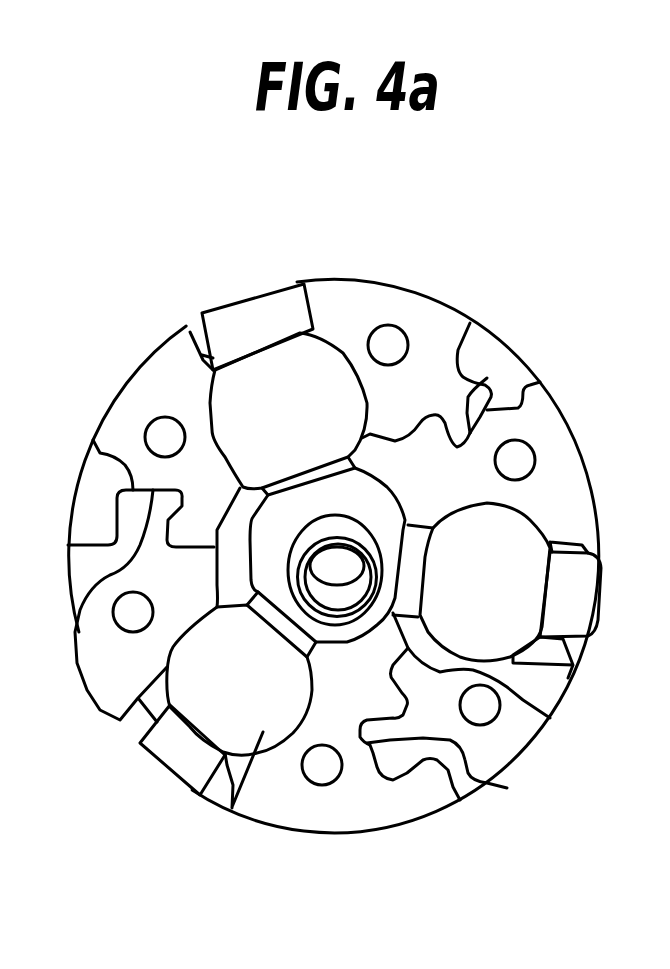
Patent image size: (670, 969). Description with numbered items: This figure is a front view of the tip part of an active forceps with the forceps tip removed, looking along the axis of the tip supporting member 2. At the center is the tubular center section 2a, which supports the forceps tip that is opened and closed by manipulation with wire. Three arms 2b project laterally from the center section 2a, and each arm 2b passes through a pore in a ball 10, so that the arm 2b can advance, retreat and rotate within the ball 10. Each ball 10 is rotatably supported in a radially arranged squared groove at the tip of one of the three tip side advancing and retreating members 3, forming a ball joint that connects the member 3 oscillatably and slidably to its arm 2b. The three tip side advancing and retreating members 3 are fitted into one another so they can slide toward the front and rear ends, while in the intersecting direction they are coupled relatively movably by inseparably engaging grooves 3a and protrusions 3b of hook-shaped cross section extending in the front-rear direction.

The tip supporting member 2 is at (377, 459).
The tubular center section 2a is at (500, 665).
The arm 2b is at (225, 308).
The tip side advancing and retreating member 3 is at (381, 284).
The groove 3a is at (487, 378).
The protrusion 3b is at (93, 440).
The ball 10 is at (263, 358).